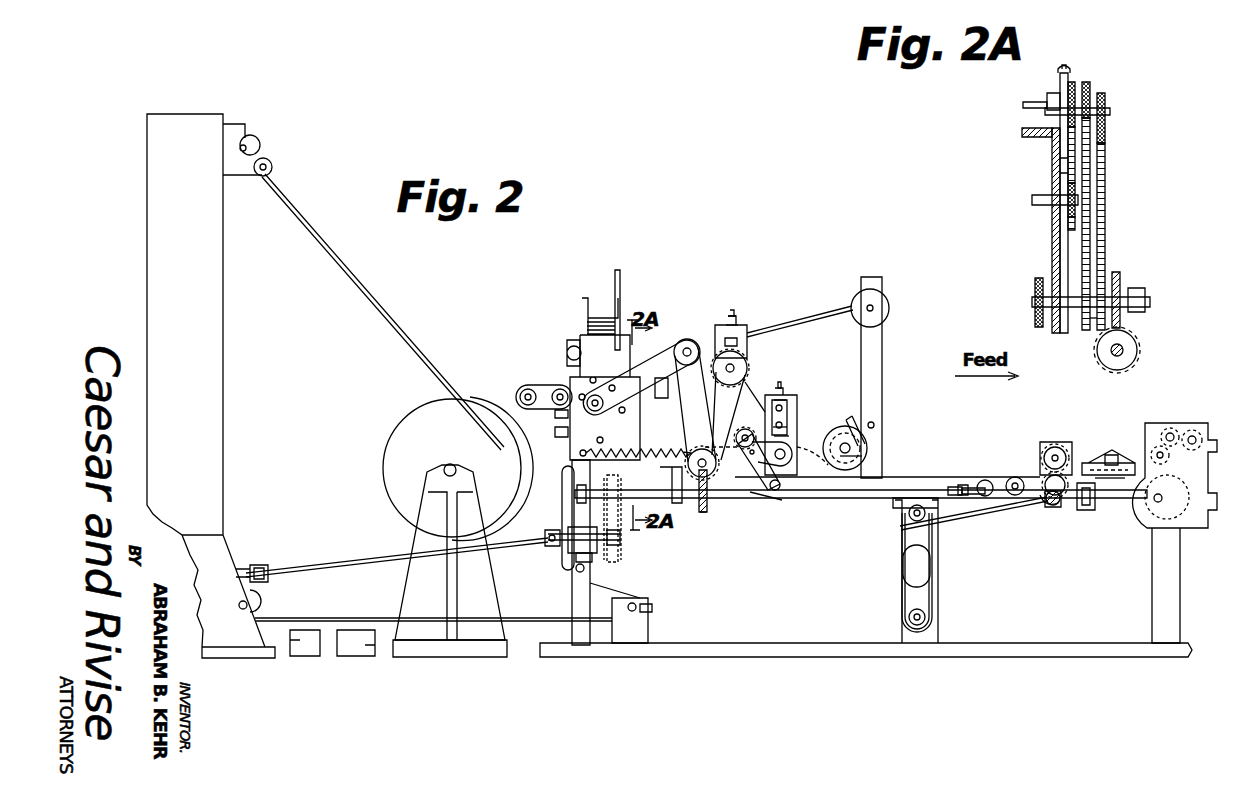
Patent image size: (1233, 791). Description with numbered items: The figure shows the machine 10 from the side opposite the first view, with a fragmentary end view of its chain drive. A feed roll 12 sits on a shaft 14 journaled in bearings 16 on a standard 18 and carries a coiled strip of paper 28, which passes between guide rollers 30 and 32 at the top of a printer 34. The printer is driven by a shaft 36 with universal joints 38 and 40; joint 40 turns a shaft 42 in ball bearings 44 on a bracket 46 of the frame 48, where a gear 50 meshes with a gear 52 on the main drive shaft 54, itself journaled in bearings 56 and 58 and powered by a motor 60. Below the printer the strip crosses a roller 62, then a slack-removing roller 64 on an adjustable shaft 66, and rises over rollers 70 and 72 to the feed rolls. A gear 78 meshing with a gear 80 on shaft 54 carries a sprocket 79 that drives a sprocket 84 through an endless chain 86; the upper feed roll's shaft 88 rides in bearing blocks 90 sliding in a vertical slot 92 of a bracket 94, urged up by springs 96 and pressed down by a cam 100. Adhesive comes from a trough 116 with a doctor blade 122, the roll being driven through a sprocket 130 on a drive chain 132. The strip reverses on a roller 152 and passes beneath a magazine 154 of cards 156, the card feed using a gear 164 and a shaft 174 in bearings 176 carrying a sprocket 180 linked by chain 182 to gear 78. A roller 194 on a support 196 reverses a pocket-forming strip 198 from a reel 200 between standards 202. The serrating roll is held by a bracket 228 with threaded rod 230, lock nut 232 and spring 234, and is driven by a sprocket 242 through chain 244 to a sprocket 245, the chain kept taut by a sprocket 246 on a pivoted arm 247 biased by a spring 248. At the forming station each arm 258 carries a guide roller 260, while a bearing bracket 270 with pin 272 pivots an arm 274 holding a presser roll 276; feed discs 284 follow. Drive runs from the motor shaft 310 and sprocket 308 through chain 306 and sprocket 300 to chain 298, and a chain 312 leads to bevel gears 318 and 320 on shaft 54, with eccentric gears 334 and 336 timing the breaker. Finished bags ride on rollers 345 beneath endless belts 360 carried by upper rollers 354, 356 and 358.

In FIG. 2, the machine 10 is at (900, 351).
In FIG. 2, the feed roll 12 is at (394, 452).
In FIG. 2, the shaft 14 is at (448, 464).
In FIG. 2, the bearings 16 is at (433, 481).
In FIG. 2, the standard 18 is at (468, 630).
In FIG. 2, the coiled strip of paper 28 is at (372, 300).
In FIG. 2, the guide roller 30 is at (273, 168).
In FIG. 2, the guide roller 32 is at (257, 147).
In FIG. 2, the printer 34 is at (136, 275).
In FIG. 2, the shaft 36 is at (375, 562).
In FIG. 2, the universal joint 38 is at (260, 566).
In FIG. 2, the universal joint 40 is at (545, 537).
In FIG. 2, the shaft 42 is at (583, 545).
In FIG. 2, the ball bearings 44 is at (590, 534).
In FIG. 2, the bracket 46 is at (587, 556).
In FIG. 2, the frame 48 is at (768, 650).
In FIG. 2, the gear 50 is at (612, 543).
In FIG. 2, the gear 52 is at (615, 518).
In FIG. 2, the main drive shaft 54 is at (876, 499).
In FIG. 2A, the main drive shaft 54 is at (1112, 352).
In FIG. 2, the bearing 56 is at (577, 492).
In FIG. 2, the bearing 58 is at (1085, 510).
In FIG. 2, the motor 60 is at (903, 596).
In FIG. 2, the roller 62 is at (262, 602).
In FIG. 2, the roller 64 is at (642, 620).
In FIG. 2, the shaft 66 is at (633, 612).
In FIG. 2, the roller 70 is at (566, 566).
In FIG. 2, the roller 72 is at (562, 472).
In FIG. 2, the gear 78 is at (708, 481).
In FIG. 2A, the gear 78 is at (1121, 280).
In FIG. 2A, the sprocket 79 is at (1035, 296).
In FIG. 2, the gear 80 is at (702, 512).
In FIG. 2A, the gear 80 is at (1132, 348).
In FIG. 2, the sprocket 84 is at (780, 490).
In FIG. 2, the endless chain 86 is at (762, 510).
In FIG. 2, the shaft 88 is at (788, 428).
In FIG. 2, the bearing blocks 90 is at (789, 437).
In FIG. 2, the vertical slot 92 is at (782, 396).
In FIG. 2, the bracket 94 is at (784, 404).
In FIG. 2, the springs 96 is at (797, 452).
In FIG. 2, the cam 100 is at (540, 393).
In FIG. 2, the trough 116 is at (555, 432).
In FIG. 2, the doctor blade 122 is at (555, 415).
In FIG. 2, the sprocket 130 is at (600, 408).
In FIG. 2A, the sprocket 130 is at (1068, 220).
In FIG. 2, the drive chain 132 is at (657, 372).
In FIG. 2A, the drive chain 132 is at (1068, 174).
In FIG. 2, the roller 152 is at (522, 392).
In FIG. 2, the magazine 154 is at (618, 270).
In FIG. 2, the cards 156 is at (597, 320).
In FIG. 2, the gear 164 is at (568, 348).
In FIG. 2, the shaft 174 is at (686, 340).
In FIG. 2A, the shaft 174 is at (1023, 104).
In FIG. 2A, the bearings 176 is at (1048, 95).
In FIG. 2, the sprocket 180 is at (718, 355).
In FIG. 2A, the sprocket 180 is at (1091, 88).
In FIG. 2, the endless chain 182 is at (682, 440).
In FIG. 2A, the endless chain 182 is at (1090, 203).
In FIG. 2, the roller 194 is at (643, 378).
In FIG. 2, the support 196 is at (660, 386).
In FIG. 2, the pocket-forming strip 198 is at (830, 318).
In FIG. 2, the reel 200 is at (884, 304).
In FIG. 2, the standards 202 is at (874, 378).
In FIG. 2, the bracket 228 is at (735, 338).
In FIG. 2, the threaded rod 230 is at (735, 318).
In FIG. 2, the lock nut 232 is at (732, 325).
In FIG. 2, the spring 234 is at (718, 386).
In FIG. 2, the sprocket 242 is at (740, 372).
In FIG. 2A, the sprocket 242 is at (1107, 104).
In FIG. 2, the endless chain 244 is at (728, 462).
In FIG. 2A, the endless chain 244 is at (1106, 160).
In FIG. 2, the sprocket 245 is at (692, 480).
In FIG. 2A, the sprocket 245 is at (1123, 270).
In FIG. 2, the sprocket 246 is at (745, 400).
In FIG. 2, the pivoted arm 247 is at (785, 500).
In FIG. 2, the spring 248 is at (662, 456).
In FIG. 2, the arm 258 is at (858, 424).
In FIG. 2, the guide roller 260 is at (863, 457).
In FIG. 2, the bearing bracket 270 is at (948, 488).
In FIG. 2, the pin 272 is at (958, 488).
In FIG. 2, the arm 274 is at (968, 486).
In FIG. 2, the presser roll 276 is at (987, 480).
In FIG. 2, the upper discs 284 is at (1020, 478).
In FIG. 2, the endless chain 298 is at (942, 516).
In FIG. 2, the sprocket 300 is at (905, 532).
In FIG. 2, the endless chain 306 is at (932, 594).
In FIG. 2, the sprocket 308 is at (925, 626).
In FIG. 2, the motor shaft 310 is at (915, 625).
In FIG. 2, the endless chain 312 is at (1030, 502).
In FIG. 2, the bevel gear 318 is at (1058, 508).
In FIG. 2, the bevel gear 320 is at (1050, 506).
In FIG. 2, the eccentric gear 334 is at (1066, 472).
In FIG. 2, the eccentric gear 336 is at (1055, 446).
In FIG. 2, the rollers 345 is at (1122, 480).
In FIG. 2, the upper roller 354 is at (1100, 460).
In FIG. 2, the upper roller 356 is at (1114, 452).
In FIG. 2, the upper roller 358 is at (1132, 460).
In FIG. 2, the endless belts 360 is at (1138, 480).